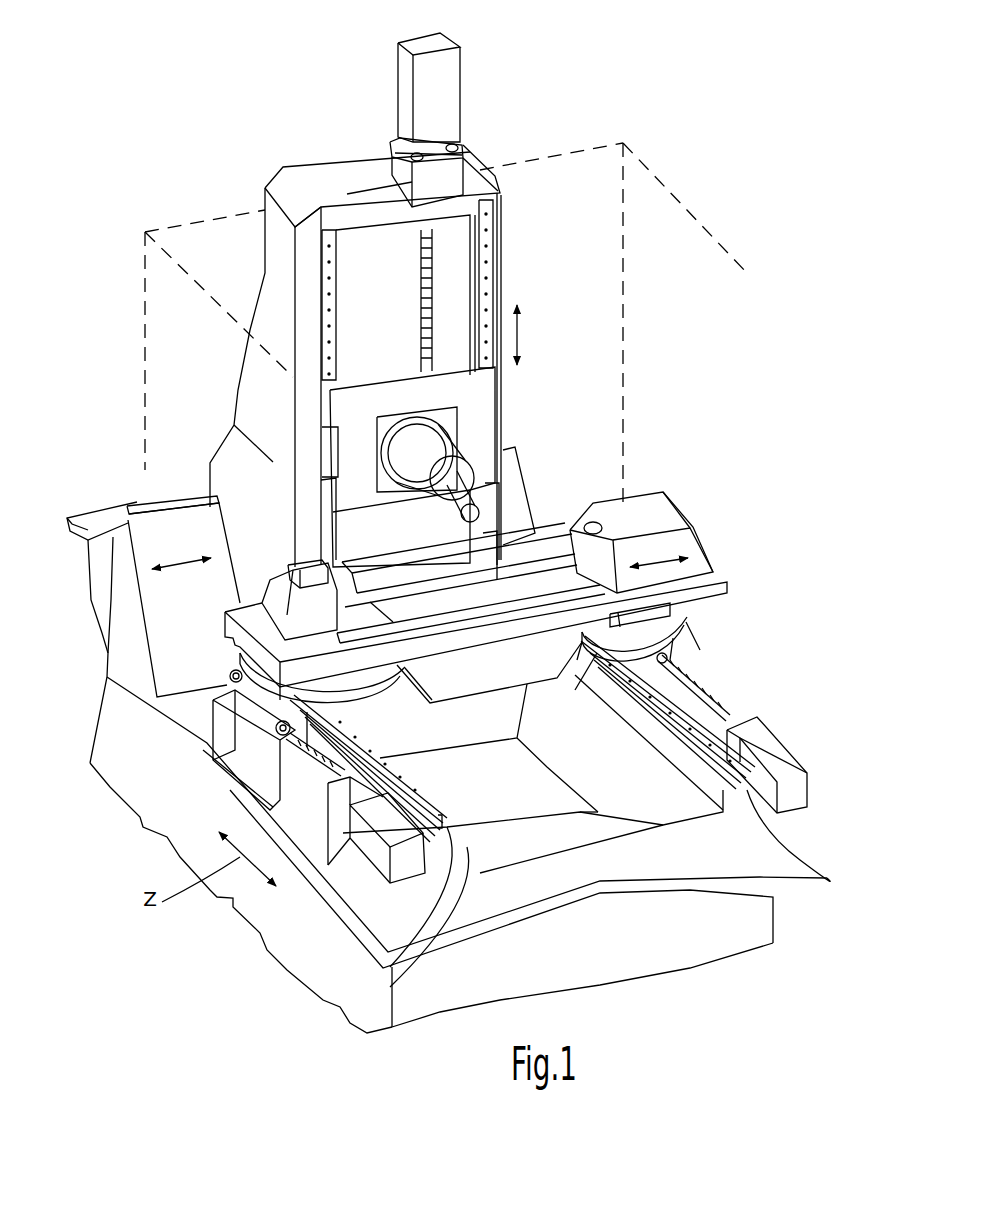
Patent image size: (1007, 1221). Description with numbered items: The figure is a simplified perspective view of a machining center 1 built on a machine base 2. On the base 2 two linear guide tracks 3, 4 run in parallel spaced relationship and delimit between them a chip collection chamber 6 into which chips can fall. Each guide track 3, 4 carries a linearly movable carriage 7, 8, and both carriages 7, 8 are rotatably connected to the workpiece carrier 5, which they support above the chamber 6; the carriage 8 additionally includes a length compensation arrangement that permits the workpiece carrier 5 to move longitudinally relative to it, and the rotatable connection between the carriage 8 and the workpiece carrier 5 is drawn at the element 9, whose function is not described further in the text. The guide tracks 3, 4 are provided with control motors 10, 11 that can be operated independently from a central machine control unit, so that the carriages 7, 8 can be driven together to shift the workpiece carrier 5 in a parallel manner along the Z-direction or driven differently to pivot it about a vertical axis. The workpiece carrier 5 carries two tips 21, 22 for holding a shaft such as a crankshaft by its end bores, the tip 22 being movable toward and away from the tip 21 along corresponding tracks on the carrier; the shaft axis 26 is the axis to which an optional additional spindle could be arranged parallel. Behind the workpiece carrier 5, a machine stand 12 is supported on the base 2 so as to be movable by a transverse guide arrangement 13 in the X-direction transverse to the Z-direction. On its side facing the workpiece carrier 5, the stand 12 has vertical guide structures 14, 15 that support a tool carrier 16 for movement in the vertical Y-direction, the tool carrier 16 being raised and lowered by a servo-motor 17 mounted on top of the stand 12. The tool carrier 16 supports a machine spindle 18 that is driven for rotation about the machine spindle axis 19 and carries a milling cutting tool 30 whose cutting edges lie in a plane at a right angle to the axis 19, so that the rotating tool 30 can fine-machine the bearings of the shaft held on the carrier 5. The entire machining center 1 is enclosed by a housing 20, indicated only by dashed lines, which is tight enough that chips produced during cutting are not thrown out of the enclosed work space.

The machining center 1 is at (662, 84).
The machine base 2 is at (278, 932).
The linear guide track 3 is at (400, 749).
The linear guide track 4 is at (698, 702).
The workpiece carrier 5 is at (725, 585).
The chip collection chamber 6 is at (510, 792).
The carriage 7 is at (363, 690).
The carriage 8 is at (598, 648).
The rotary table 9 is at (660, 612).
The control motor 10 is at (353, 847).
The control motor 11 is at (773, 753).
The machine stand 12 is at (345, 165).
The transverse guide arrangement 13 is at (177, 497).
The vertical guide structure 14 is at (345, 305).
The vertical guide structure 15 is at (487, 260).
The tool carrier 16 is at (385, 375).
The servo-motor 17 is at (442, 88).
The machine spindle 18 is at (437, 460).
The machine spindle axis 19 is at (523, 458).
The housing 20 is at (175, 225).
The tip 21 is at (345, 566).
The tip 22 is at (600, 518).
The shaft axis 26 is at (552, 525).
The milling cutting tool 30 is at (450, 510).